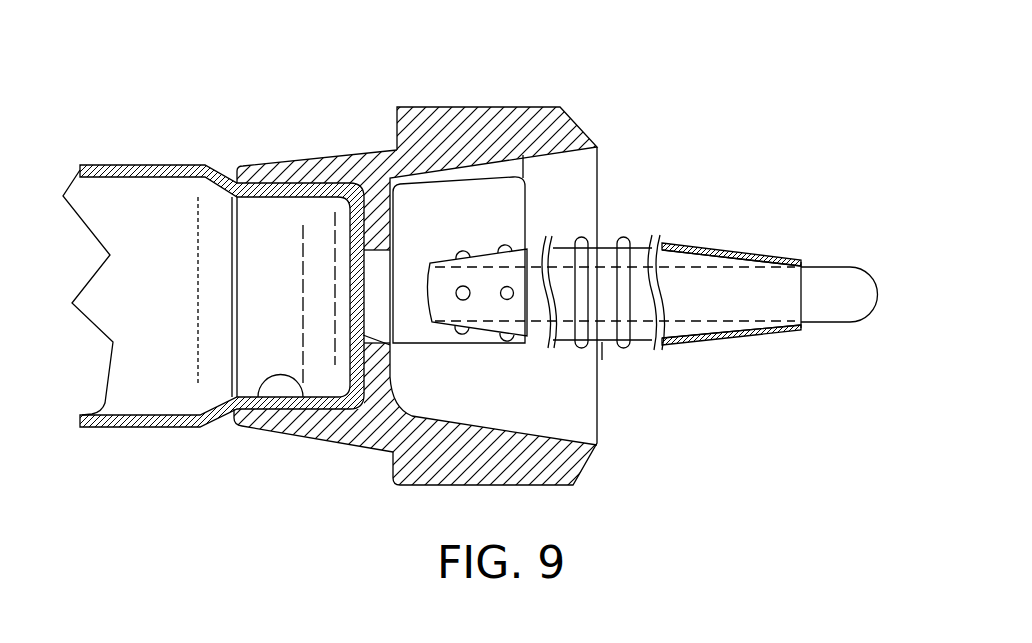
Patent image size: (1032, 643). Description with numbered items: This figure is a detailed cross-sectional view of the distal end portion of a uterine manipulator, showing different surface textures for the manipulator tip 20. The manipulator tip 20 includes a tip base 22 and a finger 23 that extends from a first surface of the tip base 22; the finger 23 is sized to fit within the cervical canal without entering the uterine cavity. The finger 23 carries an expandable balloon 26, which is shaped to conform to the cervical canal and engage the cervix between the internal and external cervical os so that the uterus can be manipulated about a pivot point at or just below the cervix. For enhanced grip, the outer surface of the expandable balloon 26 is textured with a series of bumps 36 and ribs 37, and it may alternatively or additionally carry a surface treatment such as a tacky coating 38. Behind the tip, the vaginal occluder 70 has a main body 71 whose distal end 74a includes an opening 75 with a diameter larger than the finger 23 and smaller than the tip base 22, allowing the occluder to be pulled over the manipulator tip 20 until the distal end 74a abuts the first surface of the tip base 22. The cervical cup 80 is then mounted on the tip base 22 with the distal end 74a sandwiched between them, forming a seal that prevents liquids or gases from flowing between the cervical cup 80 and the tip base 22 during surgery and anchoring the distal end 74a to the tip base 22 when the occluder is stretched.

The manipulator tip 20 is at (753, 366).
The tip base 22 is at (262, 397).
The finger 23 is at (827, 266).
The expandable balloon 26 is at (678, 245).
The bumps 36 is at (503, 242).
The ribs 37 is at (590, 236).
The tacky coating 38 is at (731, 248).
The vaginal occluder 70 is at (137, 438).
The main body 71 is at (113, 165).
The main body distal end 74a is at (262, 167).
The opening 75 is at (364, 336).
The cervical cup 80 is at (490, 130).